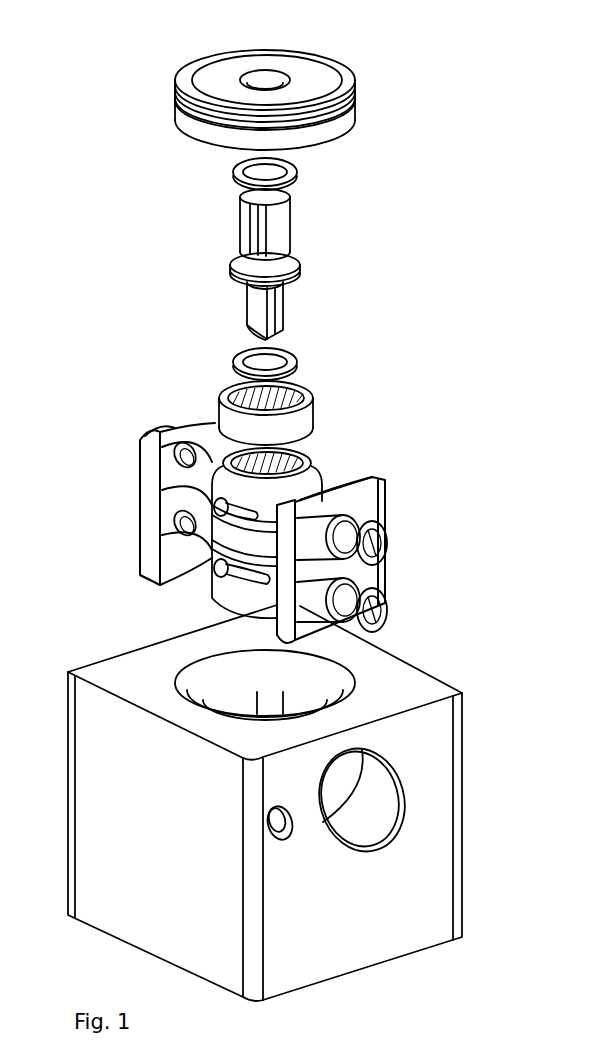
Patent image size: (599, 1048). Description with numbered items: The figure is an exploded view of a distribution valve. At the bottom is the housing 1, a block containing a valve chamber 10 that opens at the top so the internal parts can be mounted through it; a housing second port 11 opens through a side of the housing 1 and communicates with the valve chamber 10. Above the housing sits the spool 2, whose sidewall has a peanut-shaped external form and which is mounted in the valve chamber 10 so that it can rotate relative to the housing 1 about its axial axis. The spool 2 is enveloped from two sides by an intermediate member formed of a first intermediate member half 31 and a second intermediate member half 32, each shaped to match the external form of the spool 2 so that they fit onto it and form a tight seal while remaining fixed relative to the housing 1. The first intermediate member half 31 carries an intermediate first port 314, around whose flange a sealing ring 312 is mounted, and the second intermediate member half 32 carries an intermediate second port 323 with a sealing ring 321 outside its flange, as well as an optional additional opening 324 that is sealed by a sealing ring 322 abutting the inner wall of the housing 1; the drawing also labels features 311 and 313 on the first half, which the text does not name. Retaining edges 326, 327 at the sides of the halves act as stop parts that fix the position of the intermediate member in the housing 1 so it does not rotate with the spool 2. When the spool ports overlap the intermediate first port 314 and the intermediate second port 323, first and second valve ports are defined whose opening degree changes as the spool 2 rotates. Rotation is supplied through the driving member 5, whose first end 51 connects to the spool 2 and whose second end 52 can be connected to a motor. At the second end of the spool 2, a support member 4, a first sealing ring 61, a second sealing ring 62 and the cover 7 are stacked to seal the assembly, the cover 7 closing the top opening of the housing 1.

The housing 1 is at (310, 796).
The valve chamber 10 is at (213, 700).
The housing second port 11 is at (375, 807).
The spool 2 is at (307, 482).
The first intermediate member half 31 is at (127, 478).
The rounded top of clamp plate 311 is at (153, 425).
The sealing ring 312 is at (140, 520).
The upper screw hole 313 is at (187, 440).
The intermediate first port 314 is at (170, 532).
The second intermediate member half 32 is at (324, 520).
The sealing ring 321 is at (382, 532).
The sealing ring 322 is at (383, 587).
The intermediate second port 323 is at (385, 502).
The additional opening 324 is at (382, 567).
The retaining edge 326 is at (277, 605).
The retaining edge 327 is at (375, 482).
The support member 4 is at (222, 392).
The driving member 5 is at (260, 276).
The first end 51 is at (285, 313).
The second end 52 is at (283, 223).
The first sealing ring 61 is at (242, 345).
The second sealing ring 62 is at (237, 175).
The cover 7 is at (218, 85).